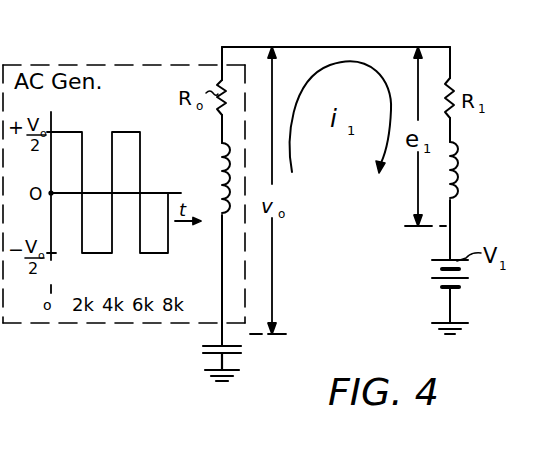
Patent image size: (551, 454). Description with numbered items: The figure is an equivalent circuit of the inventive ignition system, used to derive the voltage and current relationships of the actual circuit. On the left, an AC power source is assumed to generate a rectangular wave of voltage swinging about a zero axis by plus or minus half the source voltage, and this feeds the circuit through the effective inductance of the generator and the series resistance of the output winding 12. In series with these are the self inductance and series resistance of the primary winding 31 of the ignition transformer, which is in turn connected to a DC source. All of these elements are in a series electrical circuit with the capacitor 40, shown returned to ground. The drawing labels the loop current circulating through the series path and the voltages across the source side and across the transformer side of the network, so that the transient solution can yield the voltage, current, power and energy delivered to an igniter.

The output winding 12 is at (218, 148).
The primary winding 31 is at (456, 155).
The capacitor 40 is at (205, 347).